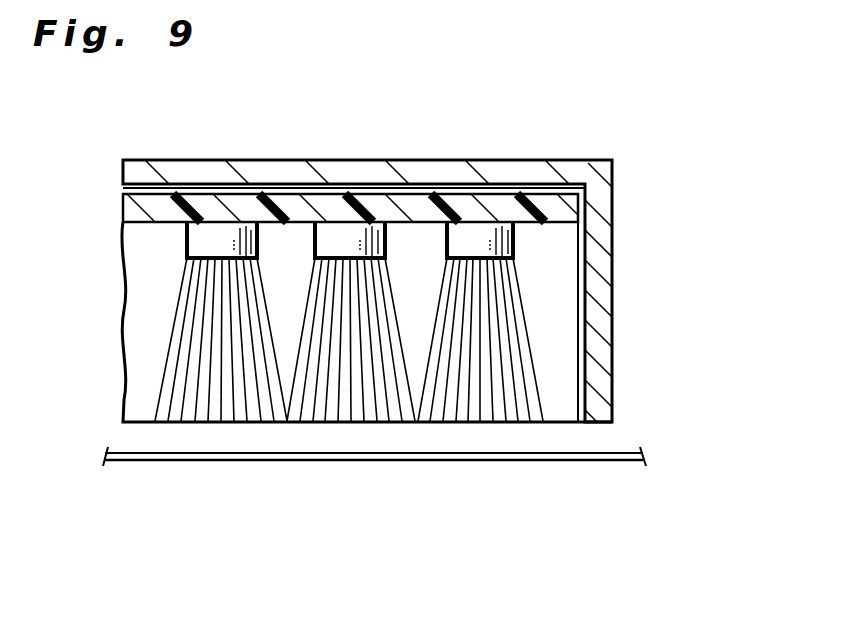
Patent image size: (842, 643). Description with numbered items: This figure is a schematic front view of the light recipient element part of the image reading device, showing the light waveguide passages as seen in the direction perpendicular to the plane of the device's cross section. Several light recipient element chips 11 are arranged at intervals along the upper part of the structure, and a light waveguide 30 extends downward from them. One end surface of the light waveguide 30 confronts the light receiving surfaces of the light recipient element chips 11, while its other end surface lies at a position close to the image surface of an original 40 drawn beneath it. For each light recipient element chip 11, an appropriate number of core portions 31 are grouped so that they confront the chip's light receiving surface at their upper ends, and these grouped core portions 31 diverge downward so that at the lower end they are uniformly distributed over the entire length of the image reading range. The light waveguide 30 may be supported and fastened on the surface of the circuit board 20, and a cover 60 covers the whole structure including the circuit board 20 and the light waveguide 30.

The light recipient element chip 11 is at (342, 236).
The circuit board 20 is at (423, 203).
The light waveguide 30 is at (431, 323).
The core portion 31 is at (365, 383).
The original 40 is at (215, 460).
The cover 60 is at (598, 249).